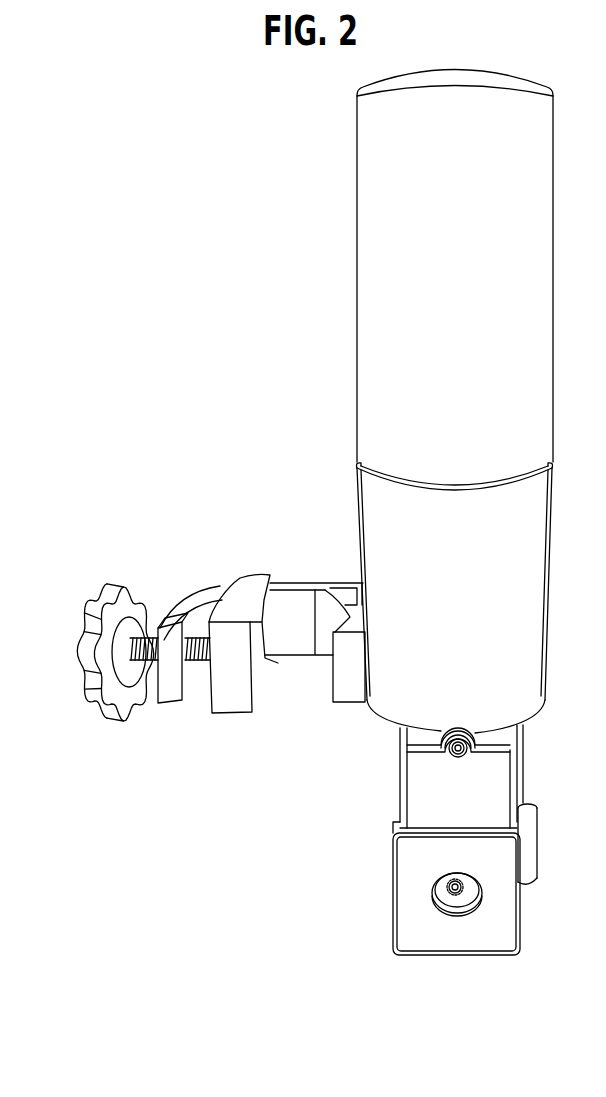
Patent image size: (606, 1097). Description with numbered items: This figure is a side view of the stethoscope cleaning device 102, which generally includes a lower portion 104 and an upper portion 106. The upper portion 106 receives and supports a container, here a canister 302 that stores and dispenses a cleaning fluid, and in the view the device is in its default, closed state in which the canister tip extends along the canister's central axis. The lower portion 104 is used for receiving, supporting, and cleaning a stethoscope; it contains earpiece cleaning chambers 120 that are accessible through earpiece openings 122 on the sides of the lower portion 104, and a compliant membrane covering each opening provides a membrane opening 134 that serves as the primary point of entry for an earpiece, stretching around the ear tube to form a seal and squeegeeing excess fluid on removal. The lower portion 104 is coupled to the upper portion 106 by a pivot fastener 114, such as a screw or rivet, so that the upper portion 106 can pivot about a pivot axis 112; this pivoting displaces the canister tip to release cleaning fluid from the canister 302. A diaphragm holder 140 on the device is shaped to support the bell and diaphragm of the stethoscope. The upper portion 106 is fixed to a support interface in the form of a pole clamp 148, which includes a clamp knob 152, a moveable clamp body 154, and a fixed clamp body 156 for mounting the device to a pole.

The stethoscope cleaning device 102 is at (459, 576).
The lower portion 104 is at (497, 930).
The upper portion 106 is at (364, 522).
The pivot axis 112 is at (459, 730).
The pivot fastener 114 is at (455, 755).
The earpiece cleaning chambers 120 is at (438, 916).
The earpiece openings 122 is at (470, 912).
The membrane opening 134 is at (437, 890).
The diaphragm holder 140 is at (528, 848).
The pole clamp 148 is at (86, 626).
The clamp knob 152 is at (108, 592).
The moveable clamp body 154 is at (234, 697).
The fixed clamp body 156 is at (180, 592).
The canister 302 is at (490, 80).